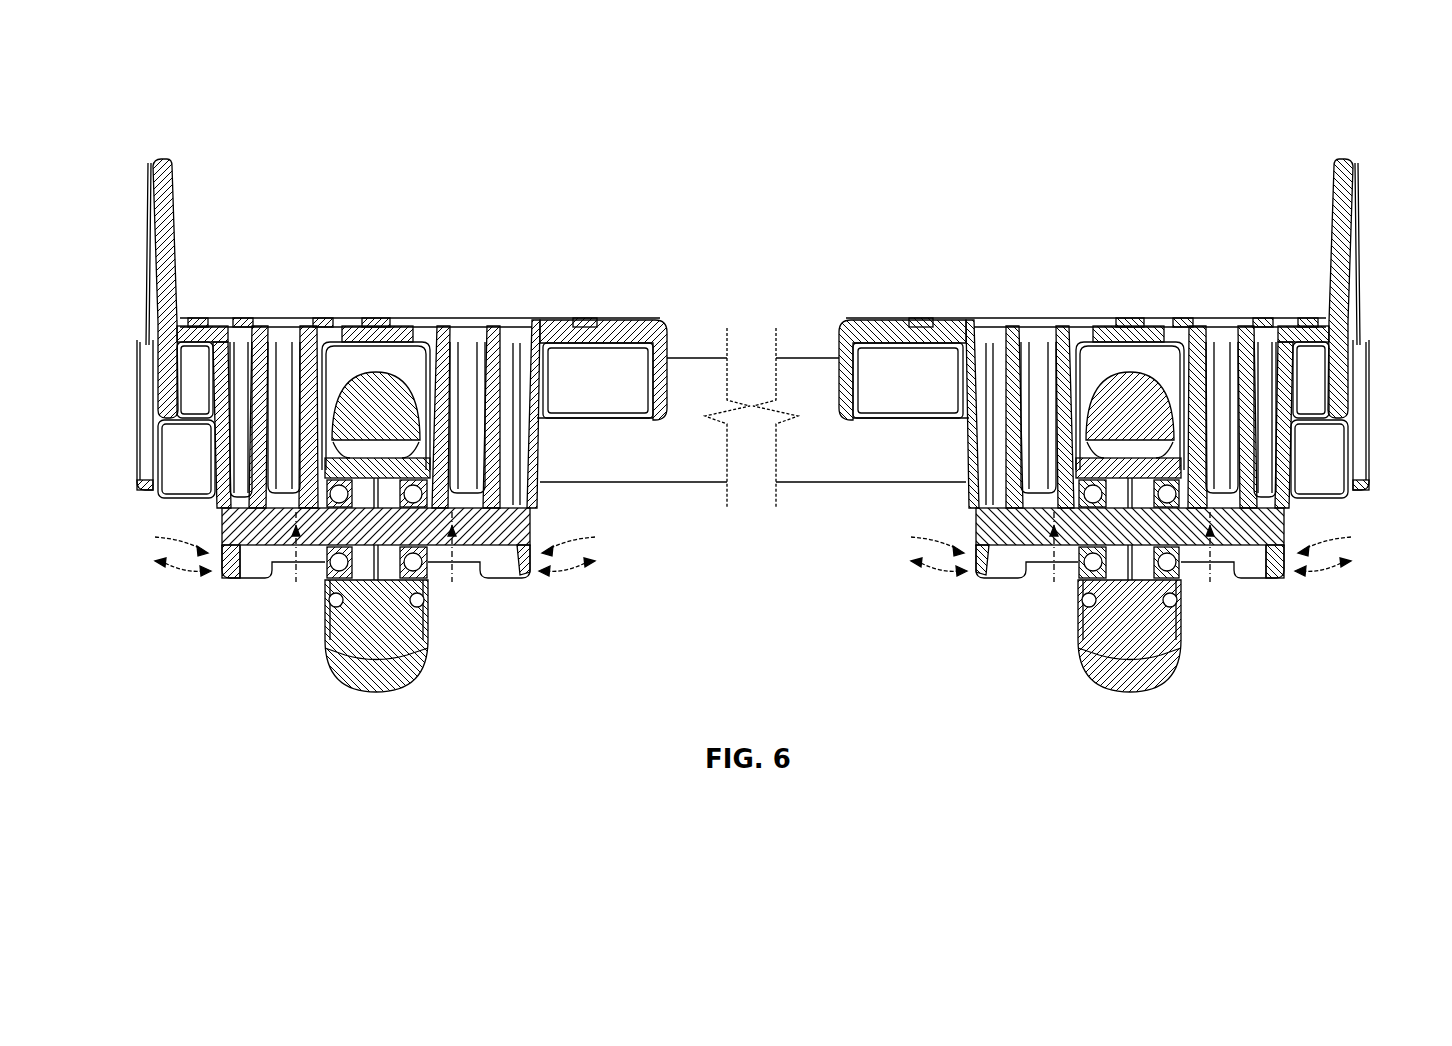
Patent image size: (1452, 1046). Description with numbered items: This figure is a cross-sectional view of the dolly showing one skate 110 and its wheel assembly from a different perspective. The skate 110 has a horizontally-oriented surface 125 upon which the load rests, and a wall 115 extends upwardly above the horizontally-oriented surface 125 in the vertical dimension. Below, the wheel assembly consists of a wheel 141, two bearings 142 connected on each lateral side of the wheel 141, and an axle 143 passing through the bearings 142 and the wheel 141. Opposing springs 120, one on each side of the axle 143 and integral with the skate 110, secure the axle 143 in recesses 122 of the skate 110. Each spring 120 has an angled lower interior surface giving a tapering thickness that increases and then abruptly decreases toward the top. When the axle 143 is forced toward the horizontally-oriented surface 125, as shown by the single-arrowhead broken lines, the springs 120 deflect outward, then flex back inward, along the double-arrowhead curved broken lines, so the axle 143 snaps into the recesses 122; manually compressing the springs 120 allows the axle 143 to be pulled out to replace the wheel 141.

The skate 110 is at (150, 355).
The wall 115 is at (160, 247).
The spring 120 is at (753, 550).
The recess 122 is at (265, 495).
The horizontally-oriented surface 125 is at (336, 318).
The wheel 141 is at (335, 641).
The bearing 142 is at (323, 571).
The axle 143 is at (517, 532).